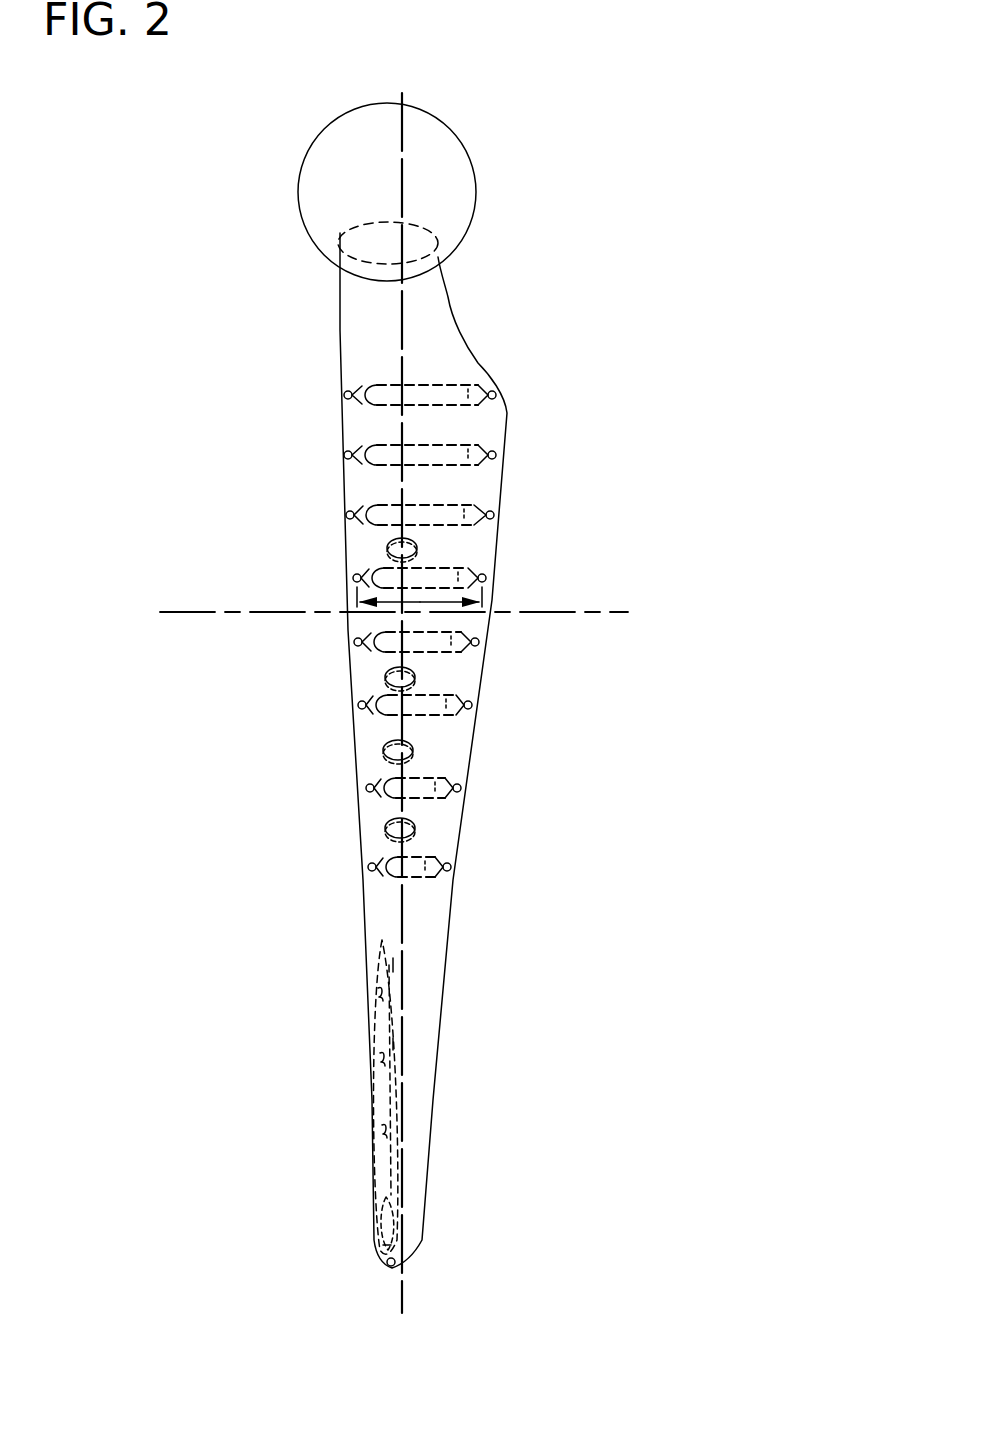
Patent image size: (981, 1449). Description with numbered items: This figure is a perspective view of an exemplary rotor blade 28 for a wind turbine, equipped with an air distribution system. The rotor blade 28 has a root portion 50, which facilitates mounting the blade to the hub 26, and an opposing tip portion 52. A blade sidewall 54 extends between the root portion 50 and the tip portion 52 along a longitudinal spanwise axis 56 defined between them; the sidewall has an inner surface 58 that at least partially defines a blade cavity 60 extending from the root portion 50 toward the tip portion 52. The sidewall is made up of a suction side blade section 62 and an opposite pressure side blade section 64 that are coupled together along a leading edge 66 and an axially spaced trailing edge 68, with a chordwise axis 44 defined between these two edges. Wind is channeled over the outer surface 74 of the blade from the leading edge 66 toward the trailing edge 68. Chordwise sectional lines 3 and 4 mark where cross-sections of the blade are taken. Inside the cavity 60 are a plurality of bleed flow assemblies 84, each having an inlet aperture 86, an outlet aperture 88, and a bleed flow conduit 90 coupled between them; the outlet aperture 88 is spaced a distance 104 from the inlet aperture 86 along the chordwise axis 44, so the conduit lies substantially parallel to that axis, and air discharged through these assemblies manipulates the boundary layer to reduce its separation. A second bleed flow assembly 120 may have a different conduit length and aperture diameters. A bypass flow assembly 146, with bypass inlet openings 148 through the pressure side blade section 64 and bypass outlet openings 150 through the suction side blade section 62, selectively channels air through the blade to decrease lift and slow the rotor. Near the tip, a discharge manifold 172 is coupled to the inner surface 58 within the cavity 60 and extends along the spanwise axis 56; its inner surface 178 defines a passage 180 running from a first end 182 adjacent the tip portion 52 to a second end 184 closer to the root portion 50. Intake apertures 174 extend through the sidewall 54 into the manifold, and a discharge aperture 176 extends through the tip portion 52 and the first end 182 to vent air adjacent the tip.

The hub 26 is at (432, 115).
The rotor blade 28 is at (622, 130).
The root portion 50 is at (468, 293).
The tip portion 52 is at (442, 1216).
The blade sidewall 54 is at (340, 336).
The longitudinal spanwise axis 56 is at (402, 1303).
The inner surface 58 is at (345, 235).
The blade cavity 60 is at (373, 232).
The suction side blade section 62 is at (355, 357).
The pressure side blade section 64 is at (328, 305).
The leading edge 66 is at (345, 530).
The trailing edge 68 is at (498, 548).
The outer surface 74 is at (448, 343).
The bleed flow assembly 84 is at (452, 382).
The inlet aperture 86 is at (348, 572).
The outlet aperture 88 is at (484, 578).
The bleed flow conduit 90 is at (428, 695).
The distance 104 is at (418, 604).
The chordwise axis 44 is at (618, 612).
The second bleed flow assembly 120 is at (432, 886).
The bypass flow assembly 146 is at (350, 887).
The bypass inlet opening 148 is at (414, 561).
The bypass outlet opening 150 is at (418, 538).
The discharge manifold 172 is at (400, 1103).
The intake aperture 174 is at (373, 990).
The discharge aperture 176 is at (387, 1266).
The inner surface 178 is at (398, 1043).
The passage 180 is at (383, 1033).
The first end 182 is at (377, 1245).
The second end 184 is at (395, 965).
The chordwise sectional line 3- 3 is at (292, 477).
The chordwise sectional line 4- 4 is at (298, 790).